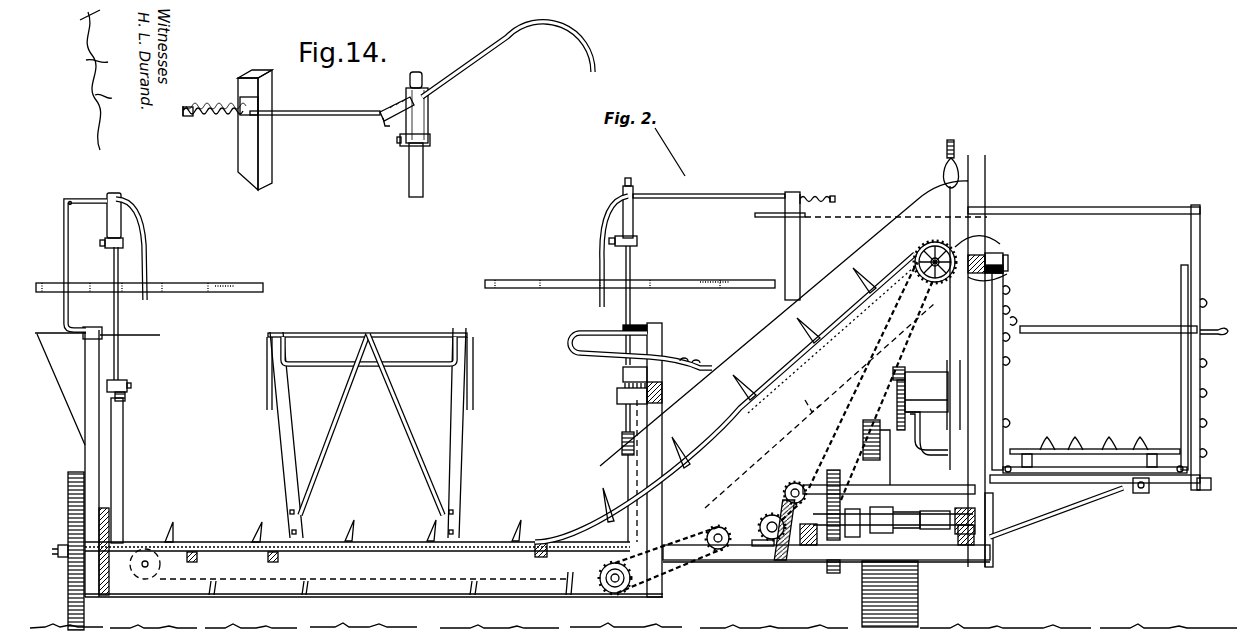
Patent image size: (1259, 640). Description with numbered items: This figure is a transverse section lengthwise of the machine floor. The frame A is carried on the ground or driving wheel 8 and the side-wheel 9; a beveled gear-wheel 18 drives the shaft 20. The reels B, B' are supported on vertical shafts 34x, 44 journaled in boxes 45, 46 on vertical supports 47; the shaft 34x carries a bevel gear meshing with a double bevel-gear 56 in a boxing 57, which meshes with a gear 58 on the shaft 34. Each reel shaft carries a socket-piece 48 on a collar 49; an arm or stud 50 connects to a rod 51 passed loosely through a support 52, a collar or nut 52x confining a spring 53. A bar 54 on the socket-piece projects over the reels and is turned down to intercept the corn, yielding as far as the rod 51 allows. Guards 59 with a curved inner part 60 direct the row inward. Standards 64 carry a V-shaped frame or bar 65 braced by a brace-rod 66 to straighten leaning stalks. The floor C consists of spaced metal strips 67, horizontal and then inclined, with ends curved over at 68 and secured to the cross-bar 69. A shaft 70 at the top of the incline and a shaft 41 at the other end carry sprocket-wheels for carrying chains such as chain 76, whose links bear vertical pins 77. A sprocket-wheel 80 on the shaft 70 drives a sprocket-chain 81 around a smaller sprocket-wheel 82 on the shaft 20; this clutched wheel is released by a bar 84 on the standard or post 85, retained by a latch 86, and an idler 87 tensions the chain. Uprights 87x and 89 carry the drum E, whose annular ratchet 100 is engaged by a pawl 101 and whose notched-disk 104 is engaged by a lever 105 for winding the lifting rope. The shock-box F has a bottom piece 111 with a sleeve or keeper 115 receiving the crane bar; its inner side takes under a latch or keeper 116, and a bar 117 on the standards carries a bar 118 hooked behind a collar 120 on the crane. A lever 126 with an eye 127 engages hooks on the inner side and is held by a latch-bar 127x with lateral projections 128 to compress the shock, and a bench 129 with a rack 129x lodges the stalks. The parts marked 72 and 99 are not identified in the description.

In FIG. 2, the ground or driving wheel 8 is at (826, 548).
In FIG. 2, the side-wheel 9 is at (63, 551).
In FIG. 2, the beveled gear-wheel 18 is at (782, 490).
In FIG. 2, the shaft 20 is at (772, 540).
In FIG. 2, the shaft 34 is at (636, 421).
In FIG. 2, the vertical shaft 34x is at (122, 316).
In FIG. 2, the shaft 41 is at (150, 564).
In FIG. 2, the vertical shaft 44 is at (118, 472).
In FIG. 2, the box 45 is at (130, 393).
In FIG. 2, the box 46 is at (624, 463).
In FIG. 2, the vertical support 47 is at (92, 375).
In FIG. 14, the socket-piece 48 is at (427, 106).
In FIG. 2, the socket-piece 48 is at (107, 216).
In FIG. 14, the collar 49 is at (430, 141).
In FIG. 2, the collar 49 is at (110, 250).
In FIG. 14, the arm or stud 50 is at (388, 106).
In FIG. 14, the rod 51 is at (315, 102).
In FIG. 2, the rod 51 is at (709, 187).
In FIG. 14, the support 52 is at (270, 155).
In FIG. 2, the support 52 is at (785, 246).
In FIG. 14, the collar or nut 52x is at (178, 96).
In FIG. 2, the collar or nut 52x is at (846, 185).
In FIG. 14, the spring 53 is at (214, 101).
In FIG. 2, the spring 53 is at (813, 189).
In FIG. 14, the bar 54 is at (507, 59).
In FIG. 2, the bar 54 is at (601, 231).
In FIG. 2, the double bevel-gear 56 is at (628, 385).
In FIG. 2, the boxing 57 is at (617, 394).
In FIG. 2, the gear 58 is at (618, 403).
In FIG. 2, the guard 59 is at (572, 348).
In FIG. 2, the curved inner part 60 is at (611, 359).
In FIG. 2, the standard 64 is at (285, 460).
In FIG. 2, the V-shaped frame or bar 65 is at (367, 335).
In FIG. 2, the brace-rod 66 is at (348, 392).
In FIG. 2, the metal strip 67 is at (751, 387).
In FIG. 2, the curved end 68 is at (970, 250).
In FIG. 2, the cross-bar 69 is at (962, 255).
In FIG. 2, the shaft 70 is at (1003, 256).
In FIG. 2, the tine 72 is at (175, 540).
In FIG. 2, the carrying chain 76 is at (512, 532).
In FIG. 2, the vertical pin 77 is at (262, 532).
In FIG. 2, the sprocket-wheel 80 is at (918, 258).
In FIG. 2, the sprocket-chain 81 is at (878, 342).
In FIG. 2, the sprocket-wheel 82 is at (781, 523).
In FIG. 2, the bar 84 is at (790, 460).
In FIG. 2, the standard or post 85 is at (804, 446).
In FIG. 2, the latch 86 is at (810, 405).
In FIG. 2, the idler 87 is at (796, 505).
In FIG. 2, the upright 87x is at (890, 325).
In FIG. 2, the intermediate post 89 is at (980, 398).
In FIG. 2, the gear 99 is at (876, 445).
In FIG. 2, the annular ratchet 100 is at (930, 436).
In FIG. 2, the pawl 101 is at (905, 374).
In FIG. 2, the notched-disk 104 is at (973, 418).
In FIG. 2, the lever 105 is at (950, 318).
In FIG. 2, the bottom piece 111 is at (1067, 472).
In FIG. 2, the sleeve or keeper 115 is at (1141, 497).
In FIG. 2, the latch or keeper 116 is at (1003, 266).
In FIG. 2, the bar 117 is at (1084, 203).
In FIG. 2, the bar 118 is at (1200, 244).
In FIG. 2, the collar 120 is at (1112, 516).
In FIG. 2, the lever 126 is at (1077, 334).
In FIG. 2, the eye 127 is at (1030, 315).
In FIG. 2, the latch-bar 127x is at (1222, 344).
In FIG. 2, the lateral projection 128 is at (1202, 384).
In FIG. 2, the bench 129 is at (1095, 461).
In FIG. 2, the rack 129x is at (1094, 430).
In FIG. 2, the frame A is at (374, 569).
In FIG. 2, the reel B is at (149, 279).
In FIG. 2, the reel B' is at (630, 274).
In FIG. 2, the floor C is at (388, 533).
In FIG. 2, the drum E is at (928, 395).
In FIG. 2, the shock-box F is at (1112, 309).